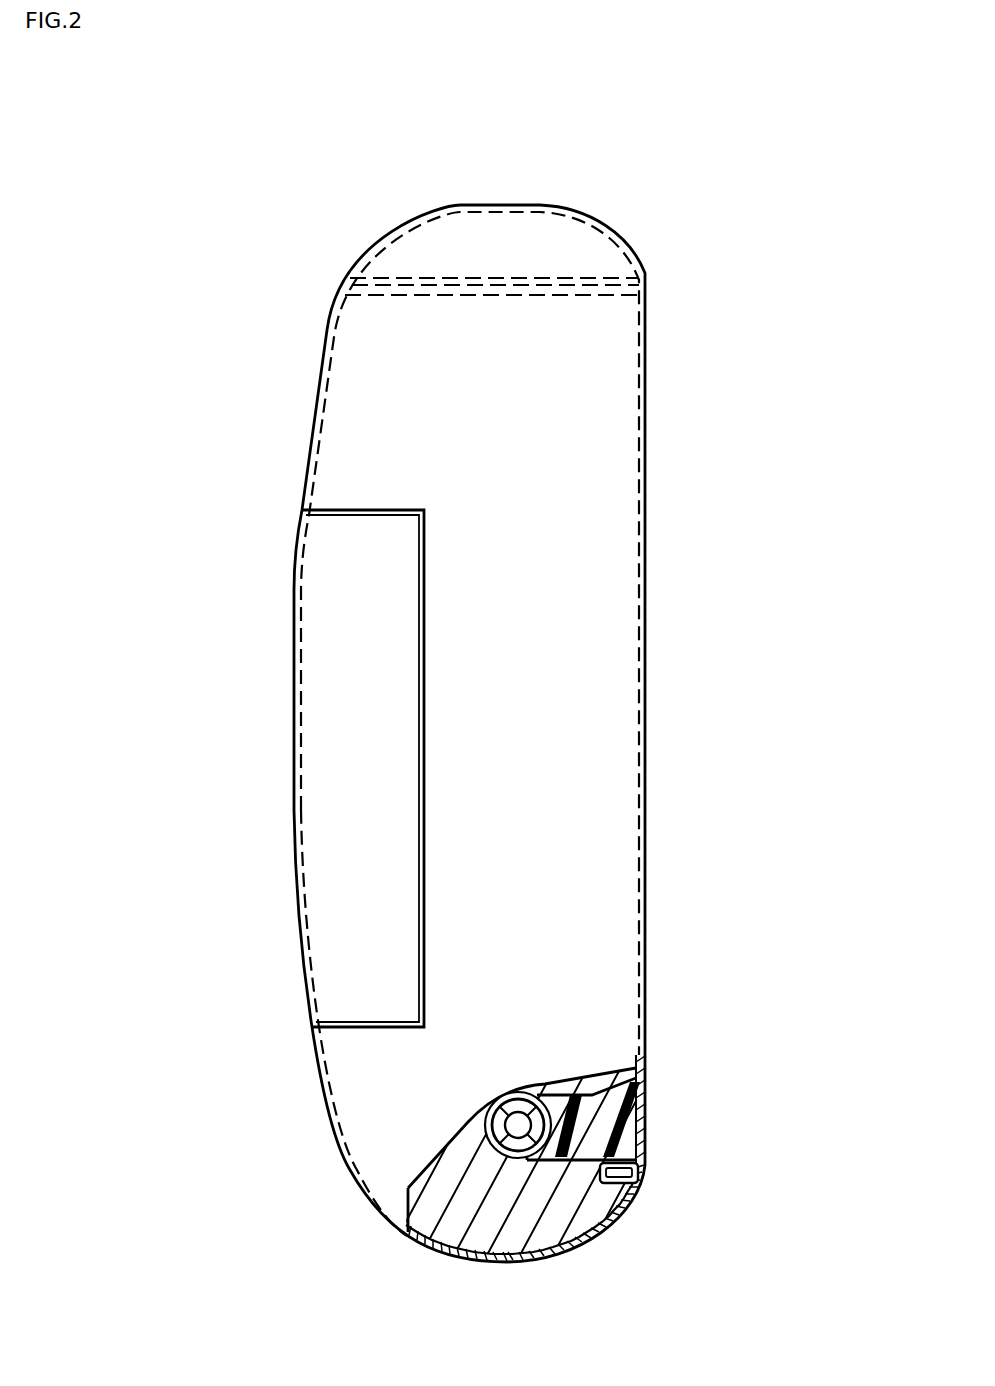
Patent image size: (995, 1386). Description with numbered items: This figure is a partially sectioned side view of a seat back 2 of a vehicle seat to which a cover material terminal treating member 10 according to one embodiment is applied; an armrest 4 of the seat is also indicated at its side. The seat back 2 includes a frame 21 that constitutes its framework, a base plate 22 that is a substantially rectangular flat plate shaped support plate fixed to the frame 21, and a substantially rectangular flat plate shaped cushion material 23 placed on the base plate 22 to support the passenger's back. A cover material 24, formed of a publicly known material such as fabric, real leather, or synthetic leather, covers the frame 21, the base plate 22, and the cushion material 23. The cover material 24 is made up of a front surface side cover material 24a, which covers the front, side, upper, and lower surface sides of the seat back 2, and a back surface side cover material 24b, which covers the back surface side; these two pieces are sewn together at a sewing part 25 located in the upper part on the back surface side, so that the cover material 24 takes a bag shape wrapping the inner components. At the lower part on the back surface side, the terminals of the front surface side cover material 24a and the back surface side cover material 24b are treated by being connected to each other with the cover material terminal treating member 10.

The seat back 2 is at (318, 268).
The armrest 4 is at (307, 828).
The cover material terminal treating member 10 is at (650, 1163).
The frame 21 is at (508, 1152).
The base plate 22 is at (623, 1122).
The cushion material 23 is at (450, 1230).
The cover material 24 is at (792, 155).
The front surface side cover material 24a is at (610, 232).
The back surface side cover material 24b is at (645, 322).
The sewing part 25 is at (522, 282).